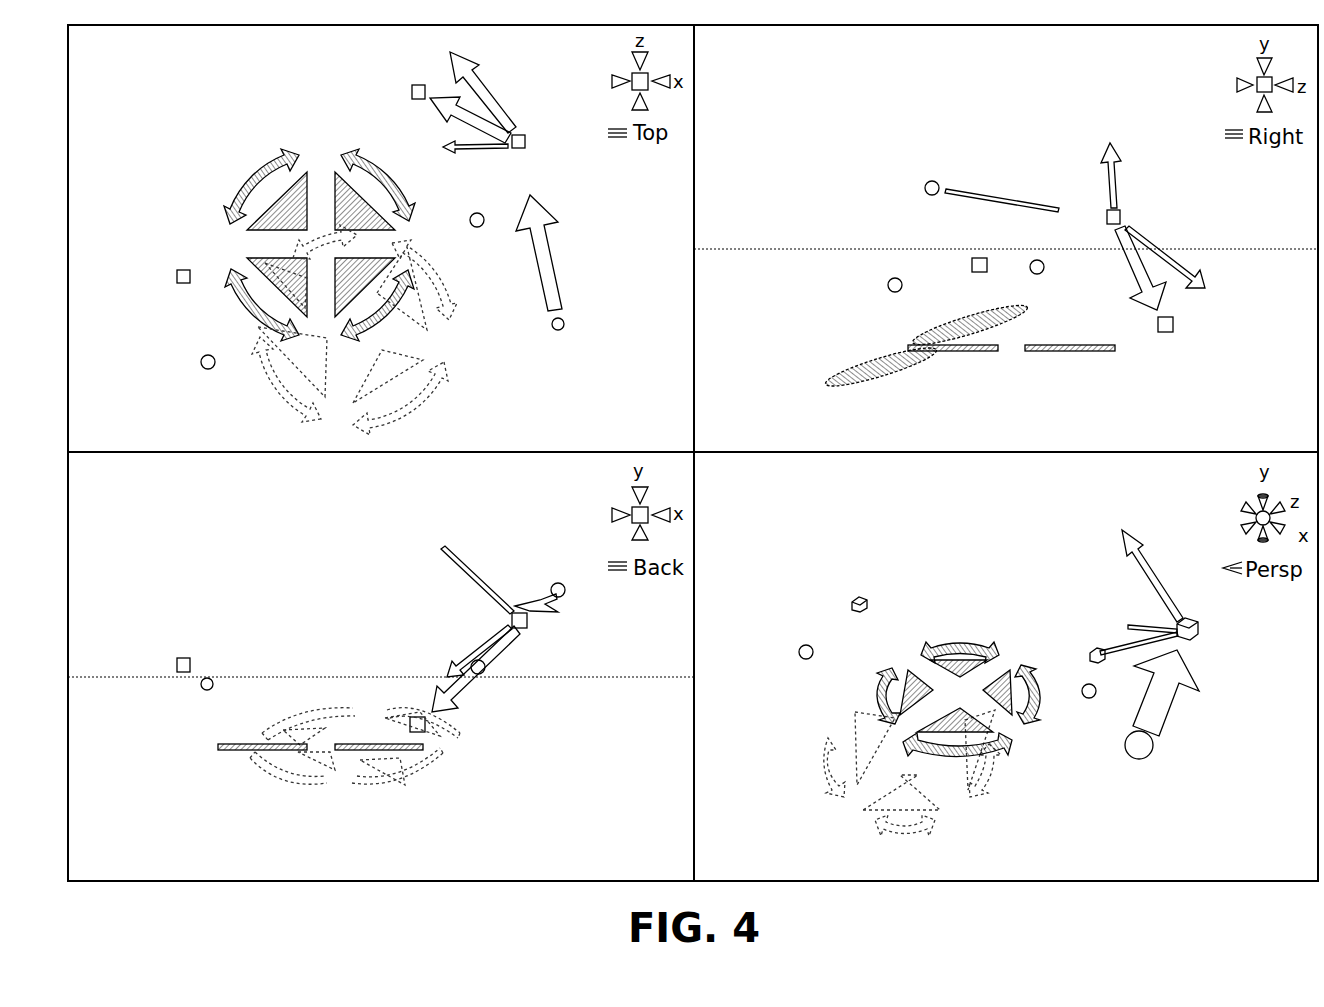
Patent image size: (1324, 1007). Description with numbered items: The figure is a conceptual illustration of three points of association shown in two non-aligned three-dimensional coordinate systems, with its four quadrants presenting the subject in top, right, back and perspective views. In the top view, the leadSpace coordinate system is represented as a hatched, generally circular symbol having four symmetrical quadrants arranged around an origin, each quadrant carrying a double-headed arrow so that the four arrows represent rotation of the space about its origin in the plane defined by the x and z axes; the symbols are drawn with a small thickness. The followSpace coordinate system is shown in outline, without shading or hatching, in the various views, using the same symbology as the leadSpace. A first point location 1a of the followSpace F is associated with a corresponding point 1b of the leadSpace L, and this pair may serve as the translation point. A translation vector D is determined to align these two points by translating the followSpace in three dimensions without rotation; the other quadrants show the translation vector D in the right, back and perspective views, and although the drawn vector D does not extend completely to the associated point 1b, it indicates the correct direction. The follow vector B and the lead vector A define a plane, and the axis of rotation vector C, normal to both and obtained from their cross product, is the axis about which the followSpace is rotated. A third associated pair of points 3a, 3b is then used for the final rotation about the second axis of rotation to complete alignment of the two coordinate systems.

The first point location of the followSpace 1a is at (565, 323).
The corresponding point of the leadSpace 1b is at (525, 138).
The third associated point of the followSpace 3a is at (202, 685).
The third associated point of the leadSpace 3b is at (175, 663).
The lead vector A is at (433, 115).
The follow vector B is at (495, 90).
The axis of rotation vector C is at (483, 149).
The translation vector D is at (553, 265).
The followSpace F is at (852, 368).
The leadSpace L is at (1080, 351).
The leadSpace coordinate system leadSpace is at (257, 178).
The followSpace coordinate system followSpace is at (407, 407).